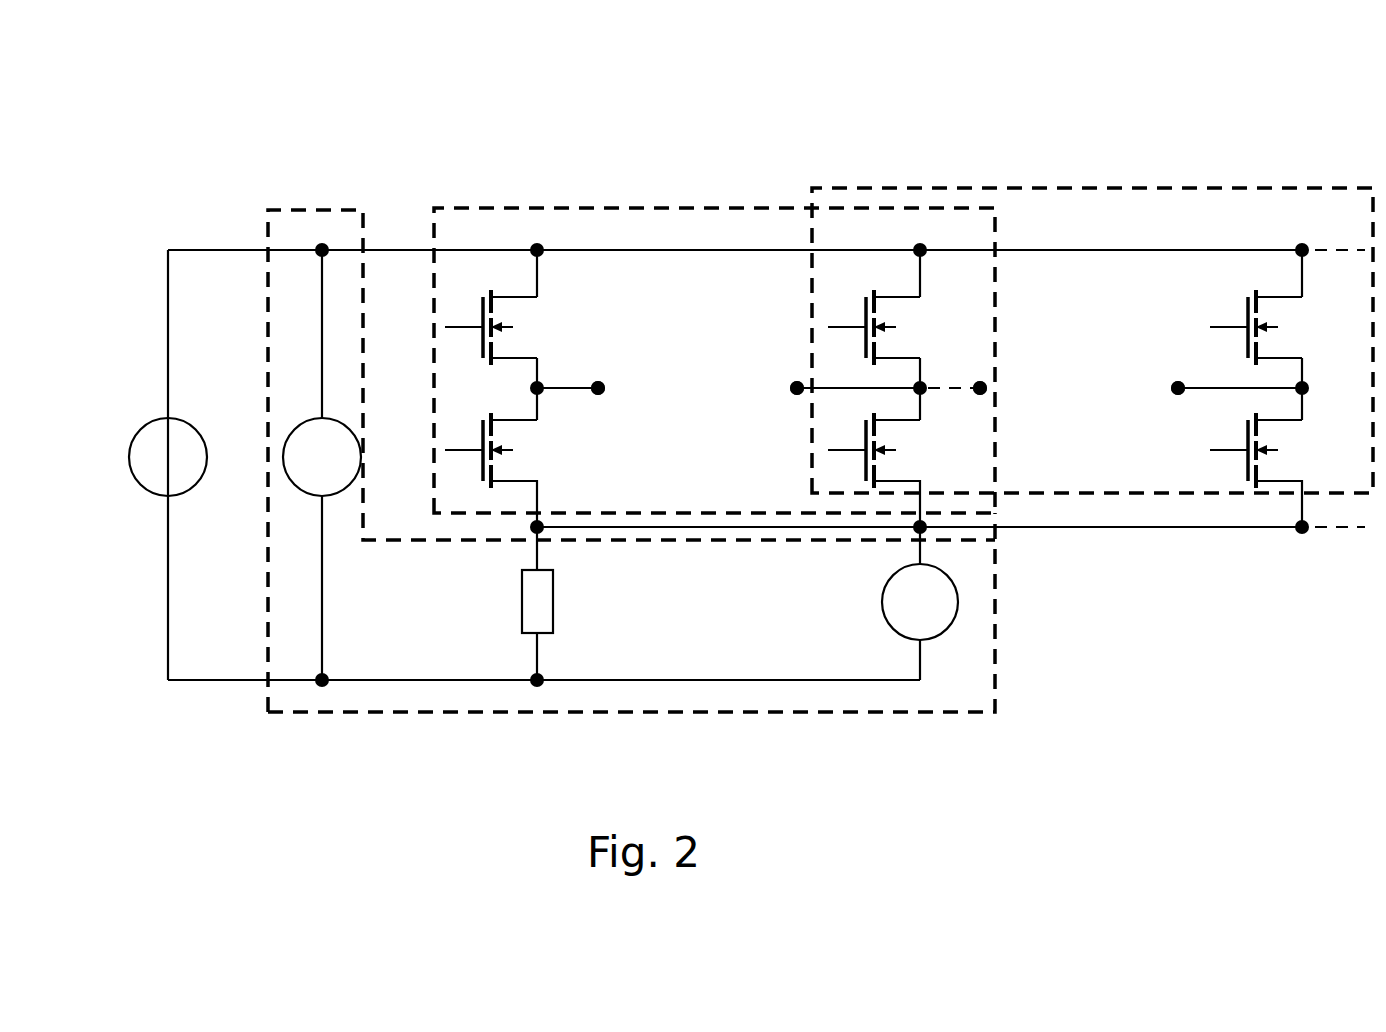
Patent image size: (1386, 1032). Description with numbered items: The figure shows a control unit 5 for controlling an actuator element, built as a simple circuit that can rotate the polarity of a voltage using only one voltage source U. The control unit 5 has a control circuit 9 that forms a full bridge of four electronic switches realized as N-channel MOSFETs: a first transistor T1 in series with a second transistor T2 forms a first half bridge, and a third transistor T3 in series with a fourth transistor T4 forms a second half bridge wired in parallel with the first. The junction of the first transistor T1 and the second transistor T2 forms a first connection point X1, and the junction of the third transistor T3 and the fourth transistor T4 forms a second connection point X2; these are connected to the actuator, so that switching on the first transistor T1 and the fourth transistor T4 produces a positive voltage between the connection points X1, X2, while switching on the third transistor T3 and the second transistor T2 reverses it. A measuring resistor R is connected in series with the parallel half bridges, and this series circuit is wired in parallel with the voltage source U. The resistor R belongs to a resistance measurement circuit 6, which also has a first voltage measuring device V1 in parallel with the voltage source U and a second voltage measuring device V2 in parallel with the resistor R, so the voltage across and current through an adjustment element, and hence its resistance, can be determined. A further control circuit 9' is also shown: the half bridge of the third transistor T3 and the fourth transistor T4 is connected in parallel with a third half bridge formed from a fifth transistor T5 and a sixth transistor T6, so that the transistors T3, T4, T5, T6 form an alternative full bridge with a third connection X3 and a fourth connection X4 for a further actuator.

The control unit 5 is at (486, 156).
The resistance measurement circuit 6 is at (270, 211).
The control circuit 9 is at (714, 297).
The further control circuit 9' is at (1092, 278).
The first transistor T1 is at (458, 327).
The second transistor T2 is at (458, 450).
The third transistor T3 is at (837, 327).
The fourth transistor T4 is at (837, 450).
The fifth transistor T5 is at (1213, 327).
The sixth transistor T6 is at (1213, 450).
The first connection point X1 is at (634, 395).
The second connection point X2 is at (761, 395).
The third connection X3 is at (1017, 395).
The fourth connection X4 is at (1142, 395).
The measuring resistor R is at (509, 601).
The voltage source U is at (185, 457).
The first voltage measuring device V1 is at (322, 457).
The second voltage measuring device V2 is at (920, 602).